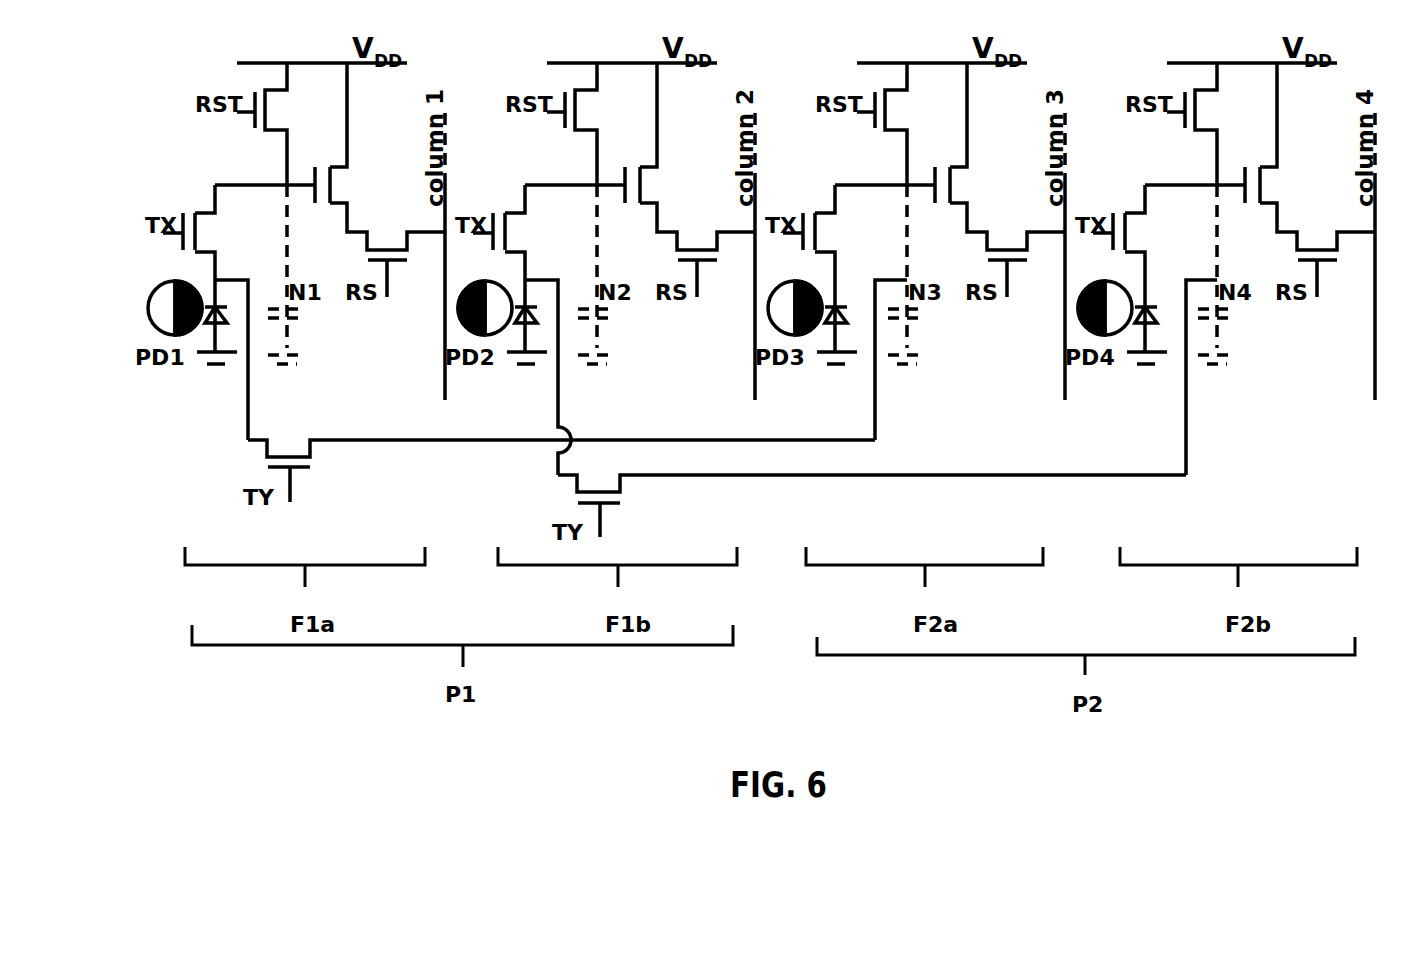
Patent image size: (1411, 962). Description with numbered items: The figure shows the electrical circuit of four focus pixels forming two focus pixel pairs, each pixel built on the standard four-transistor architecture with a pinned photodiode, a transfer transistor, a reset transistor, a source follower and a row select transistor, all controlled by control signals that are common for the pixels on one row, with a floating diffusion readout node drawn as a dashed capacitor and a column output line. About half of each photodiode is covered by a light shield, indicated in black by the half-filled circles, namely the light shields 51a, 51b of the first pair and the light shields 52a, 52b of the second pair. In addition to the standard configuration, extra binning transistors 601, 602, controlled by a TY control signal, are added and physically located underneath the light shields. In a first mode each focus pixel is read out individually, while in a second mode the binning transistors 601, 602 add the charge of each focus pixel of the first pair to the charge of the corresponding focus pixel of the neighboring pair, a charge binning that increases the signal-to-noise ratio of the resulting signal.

The light shield 51a is at (194, 326).
The light shield 51b is at (459, 306).
The light shield 52a is at (815, 326).
The light shield 52b is at (1080, 326).
The binning transistor 601 is at (561, 457).
The binning transistor 602 is at (872, 493).